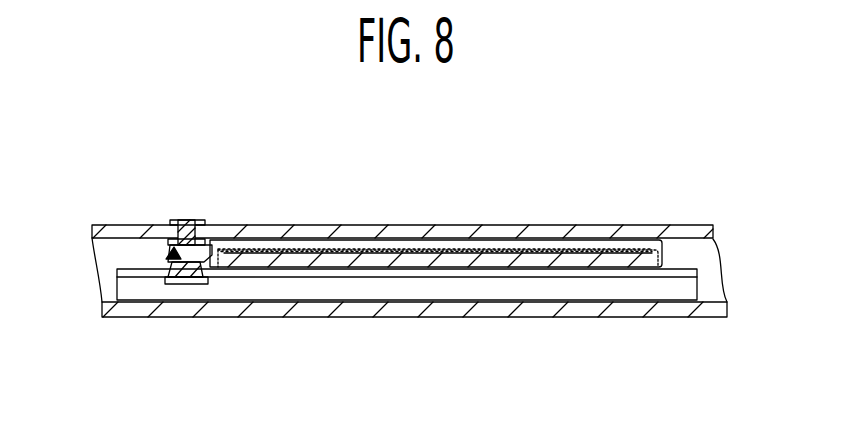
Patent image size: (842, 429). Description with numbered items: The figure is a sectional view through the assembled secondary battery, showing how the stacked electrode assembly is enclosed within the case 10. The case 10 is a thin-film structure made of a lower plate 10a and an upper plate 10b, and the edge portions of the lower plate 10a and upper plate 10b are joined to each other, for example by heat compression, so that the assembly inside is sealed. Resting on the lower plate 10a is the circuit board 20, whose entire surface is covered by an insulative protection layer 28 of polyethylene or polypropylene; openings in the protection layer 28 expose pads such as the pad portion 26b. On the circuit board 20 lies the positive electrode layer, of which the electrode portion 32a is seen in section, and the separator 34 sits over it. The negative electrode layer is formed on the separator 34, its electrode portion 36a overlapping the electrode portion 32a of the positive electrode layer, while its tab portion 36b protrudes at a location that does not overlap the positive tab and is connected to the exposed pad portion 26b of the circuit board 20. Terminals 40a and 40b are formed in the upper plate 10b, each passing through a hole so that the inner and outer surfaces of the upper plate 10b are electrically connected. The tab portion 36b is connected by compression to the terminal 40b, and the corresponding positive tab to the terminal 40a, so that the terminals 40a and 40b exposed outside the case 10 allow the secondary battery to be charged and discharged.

The case 10 is at (454, 275).
The lower plate 10a is at (437, 343).
The upper plate 10b is at (707, 228).
The circuit board 20 is at (407, 326).
The protection layer 28 is at (603, 273).
The pad portion 26b is at (186, 280).
The electrode portion 32a is at (583, 252).
The separator 34 is at (642, 258).
The electrode portion 36a is at (500, 228).
The tab portion 36b is at (168, 250).
The terminal 40a is at (187, 219).
The terminal 40b is at (166, 187).